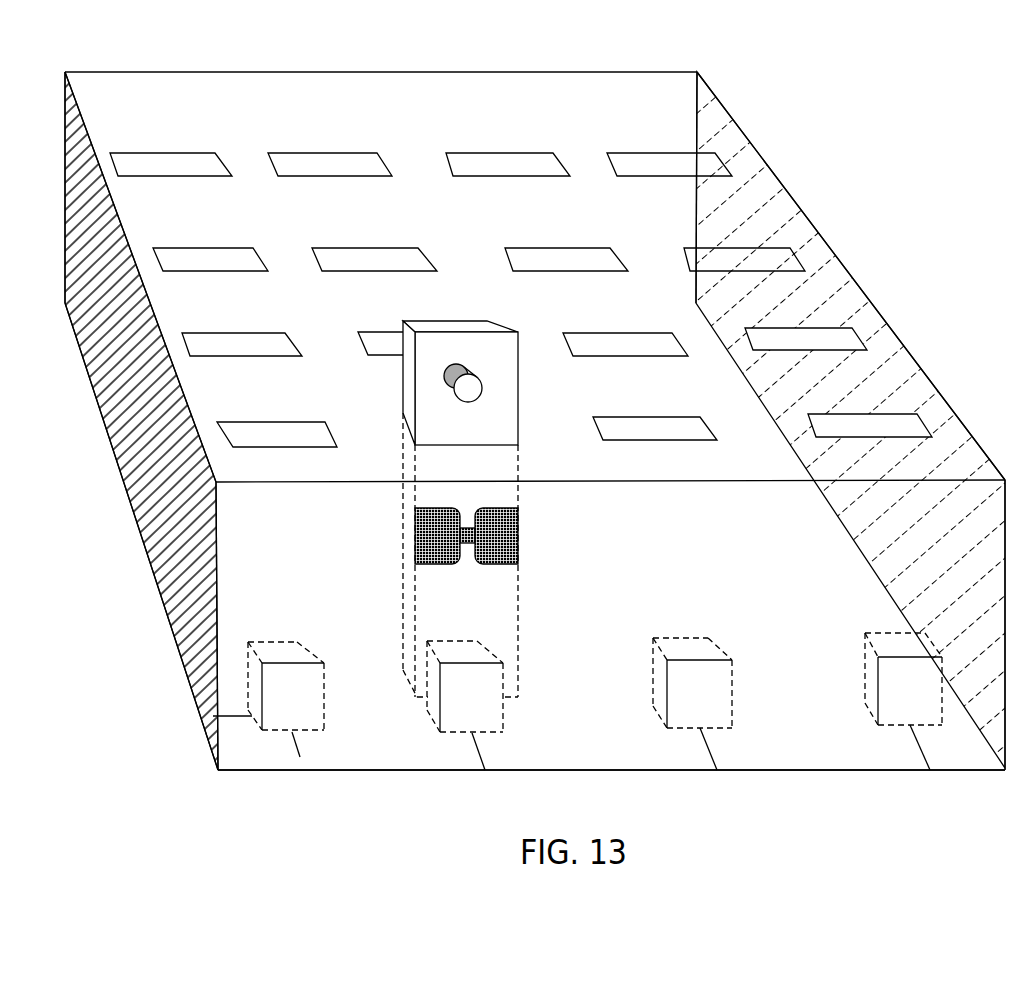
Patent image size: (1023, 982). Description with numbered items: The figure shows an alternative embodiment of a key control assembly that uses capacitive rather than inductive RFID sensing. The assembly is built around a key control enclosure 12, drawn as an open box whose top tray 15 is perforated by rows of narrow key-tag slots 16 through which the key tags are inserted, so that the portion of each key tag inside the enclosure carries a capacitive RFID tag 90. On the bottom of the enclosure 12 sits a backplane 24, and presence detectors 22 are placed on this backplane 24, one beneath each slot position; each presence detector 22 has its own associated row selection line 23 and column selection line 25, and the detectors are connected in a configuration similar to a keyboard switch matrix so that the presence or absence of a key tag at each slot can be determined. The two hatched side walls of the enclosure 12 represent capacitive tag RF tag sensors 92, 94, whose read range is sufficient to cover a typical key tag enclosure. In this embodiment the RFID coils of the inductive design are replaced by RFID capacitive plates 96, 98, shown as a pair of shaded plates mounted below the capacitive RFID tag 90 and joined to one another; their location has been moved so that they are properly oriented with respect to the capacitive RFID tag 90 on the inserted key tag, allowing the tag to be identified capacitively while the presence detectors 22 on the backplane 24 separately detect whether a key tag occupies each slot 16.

The key control enclosure 12 is at (321, 71).
The top tray 15 is at (373, 114).
The key-tag slot 16 is at (473, 153).
The presence detector 22 is at (732, 690).
The row selection line 23 is at (225, 716).
The backplane 24 is at (385, 753).
The column selection line 25 is at (300, 757).
The capacitive RFID tag 90 is at (428, 320).
The capacitive tag RF tag sensor 92 is at (160, 473).
The capacitive tag RF tag sensor 94 is at (747, 186).
The RFID capacitive plate 96 is at (415, 538).
The RFID capacitive plate 98 is at (518, 535).